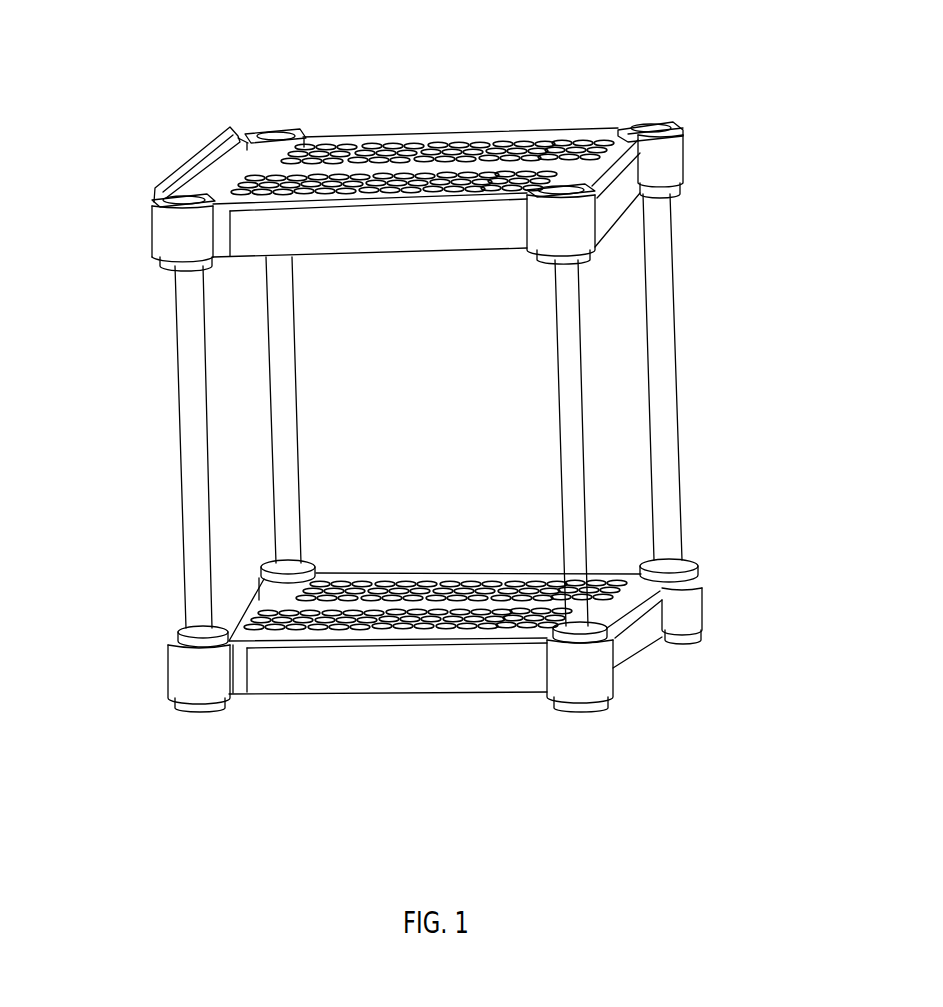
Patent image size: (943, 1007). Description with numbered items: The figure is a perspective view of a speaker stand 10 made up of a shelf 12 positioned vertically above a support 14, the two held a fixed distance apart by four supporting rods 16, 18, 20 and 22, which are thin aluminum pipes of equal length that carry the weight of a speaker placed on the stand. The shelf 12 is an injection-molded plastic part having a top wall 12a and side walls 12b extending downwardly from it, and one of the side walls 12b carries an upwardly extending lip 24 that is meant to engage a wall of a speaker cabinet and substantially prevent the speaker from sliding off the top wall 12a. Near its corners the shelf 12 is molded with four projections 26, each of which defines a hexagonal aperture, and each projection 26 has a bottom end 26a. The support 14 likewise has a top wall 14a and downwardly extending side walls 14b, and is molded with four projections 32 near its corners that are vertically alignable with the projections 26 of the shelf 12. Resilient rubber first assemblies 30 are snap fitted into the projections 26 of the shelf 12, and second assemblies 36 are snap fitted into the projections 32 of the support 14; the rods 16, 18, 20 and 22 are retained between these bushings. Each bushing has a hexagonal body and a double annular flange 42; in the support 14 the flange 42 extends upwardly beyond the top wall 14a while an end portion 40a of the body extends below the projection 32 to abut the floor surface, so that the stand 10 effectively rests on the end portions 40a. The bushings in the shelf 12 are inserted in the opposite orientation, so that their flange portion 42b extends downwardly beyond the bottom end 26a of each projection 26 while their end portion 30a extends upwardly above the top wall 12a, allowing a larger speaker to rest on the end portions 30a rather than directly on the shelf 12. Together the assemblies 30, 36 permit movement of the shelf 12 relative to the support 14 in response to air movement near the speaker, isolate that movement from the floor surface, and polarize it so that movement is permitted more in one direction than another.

The speaker stand 10 is at (744, 95).
The shelf 12 is at (608, 127).
The top wall 12a is at (443, 152).
The side walls 12b is at (612, 198).
The support 14 is at (632, 584).
The top wall 14a is at (458, 573).
The side walls 14b is at (637, 638).
The supporting rod 16 is at (193, 425).
The supporting rod 18 is at (293, 425).
The supporting rod 20 is at (668, 293).
The supporting rod 22 is at (575, 386).
The lip 24 is at (214, 156).
The projections 26 is at (303, 140).
The bottom end 26a is at (156, 262).
The first assemblies 30 is at (680, 191).
The end portion 30a is at (678, 117).
The projections 32 is at (262, 593).
The second assemblies 36 is at (308, 565).
The end portion 40a is at (560, 706).
The double annular flange 42 is at (208, 637).
The flange portion 42b is at (205, 270).